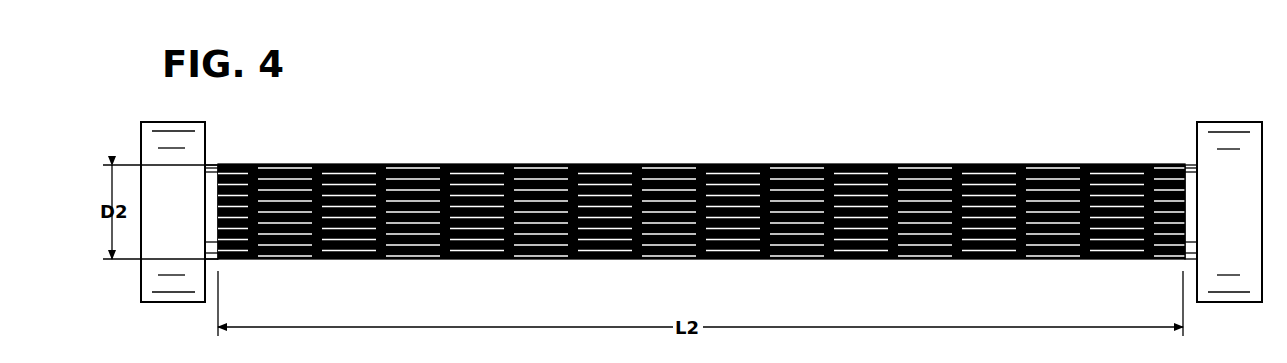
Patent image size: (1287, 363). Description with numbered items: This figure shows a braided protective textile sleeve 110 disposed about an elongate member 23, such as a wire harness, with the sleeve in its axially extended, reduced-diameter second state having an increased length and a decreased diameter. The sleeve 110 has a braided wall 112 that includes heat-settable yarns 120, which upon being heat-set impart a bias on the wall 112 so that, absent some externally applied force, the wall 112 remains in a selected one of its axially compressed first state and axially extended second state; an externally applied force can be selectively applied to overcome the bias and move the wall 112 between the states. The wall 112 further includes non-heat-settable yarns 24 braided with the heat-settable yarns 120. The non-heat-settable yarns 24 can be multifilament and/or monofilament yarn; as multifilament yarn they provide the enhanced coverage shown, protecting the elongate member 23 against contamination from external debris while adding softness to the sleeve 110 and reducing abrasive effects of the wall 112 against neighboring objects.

The sleeve 110 is at (915, 128).
The braided wall 112 is at (995, 163).
The heat-settable yarns 120 is at (562, 163).
The non-heat-settable yarns 24 is at (668, 163).
The elongate member 23 is at (1191, 165).